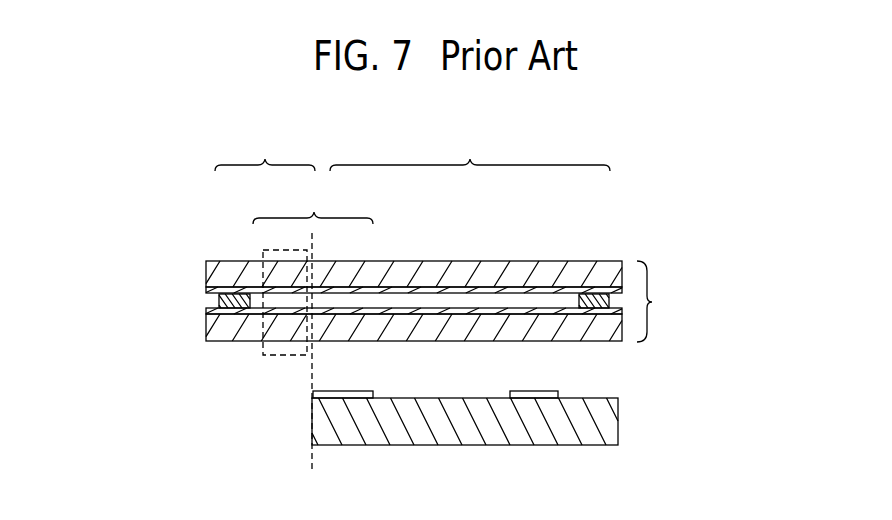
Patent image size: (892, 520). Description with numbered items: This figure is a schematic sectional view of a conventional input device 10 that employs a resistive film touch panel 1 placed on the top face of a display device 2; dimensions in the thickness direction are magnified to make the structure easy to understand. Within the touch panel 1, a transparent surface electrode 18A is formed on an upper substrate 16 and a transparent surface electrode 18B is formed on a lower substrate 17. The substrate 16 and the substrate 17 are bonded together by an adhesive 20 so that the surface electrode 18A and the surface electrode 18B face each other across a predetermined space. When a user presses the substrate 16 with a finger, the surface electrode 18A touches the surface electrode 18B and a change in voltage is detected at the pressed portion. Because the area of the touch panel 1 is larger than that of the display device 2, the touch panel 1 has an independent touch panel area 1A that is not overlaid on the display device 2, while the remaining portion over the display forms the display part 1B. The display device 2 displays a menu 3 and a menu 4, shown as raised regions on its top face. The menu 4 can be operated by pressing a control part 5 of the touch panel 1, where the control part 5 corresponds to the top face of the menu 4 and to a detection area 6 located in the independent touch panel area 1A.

The input device 10 is at (658, 180).
The resistive film touch panel 1 is at (400, 291).
The independent touch panel area 1A is at (265, 144).
The display part 1B is at (470, 145).
The control part 5 is at (313, 204).
The detection area 6 is at (283, 250).
The substrate 16 is at (597, 270).
The substrate 17 is at (595, 325).
The transparent surface electrode 18A is at (468, 291).
The transparent surface electrode 18B is at (472, 311).
The adhesive 20 is at (219, 300).
The display device 2 is at (607, 430).
The menu 3 is at (530, 395).
The menu 4 is at (350, 395).